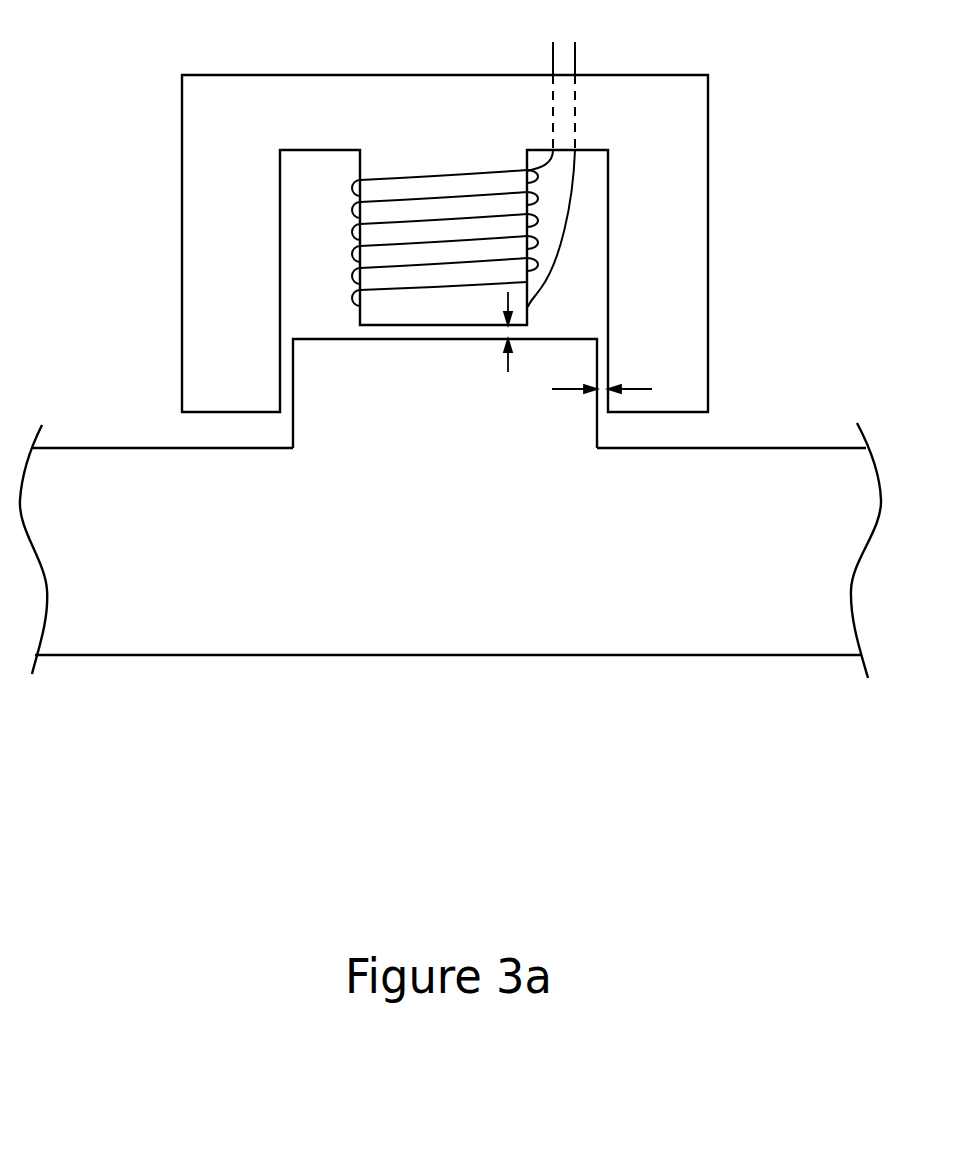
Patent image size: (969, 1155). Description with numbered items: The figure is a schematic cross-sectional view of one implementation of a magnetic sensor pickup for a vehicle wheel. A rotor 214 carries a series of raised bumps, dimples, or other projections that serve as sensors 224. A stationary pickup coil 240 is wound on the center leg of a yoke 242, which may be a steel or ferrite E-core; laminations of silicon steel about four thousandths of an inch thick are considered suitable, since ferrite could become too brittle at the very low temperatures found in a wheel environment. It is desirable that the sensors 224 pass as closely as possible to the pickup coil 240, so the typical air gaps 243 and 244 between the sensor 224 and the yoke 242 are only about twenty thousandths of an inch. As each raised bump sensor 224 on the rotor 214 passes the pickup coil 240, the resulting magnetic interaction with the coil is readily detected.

The yoke 242 is at (693, 201).
The pickup coil 240 is at (373, 292).
The sensor 224 is at (473, 415).
The rotor 214 is at (192, 566).
The air gap 244 is at (510, 362).
The air gap 243 is at (632, 390).